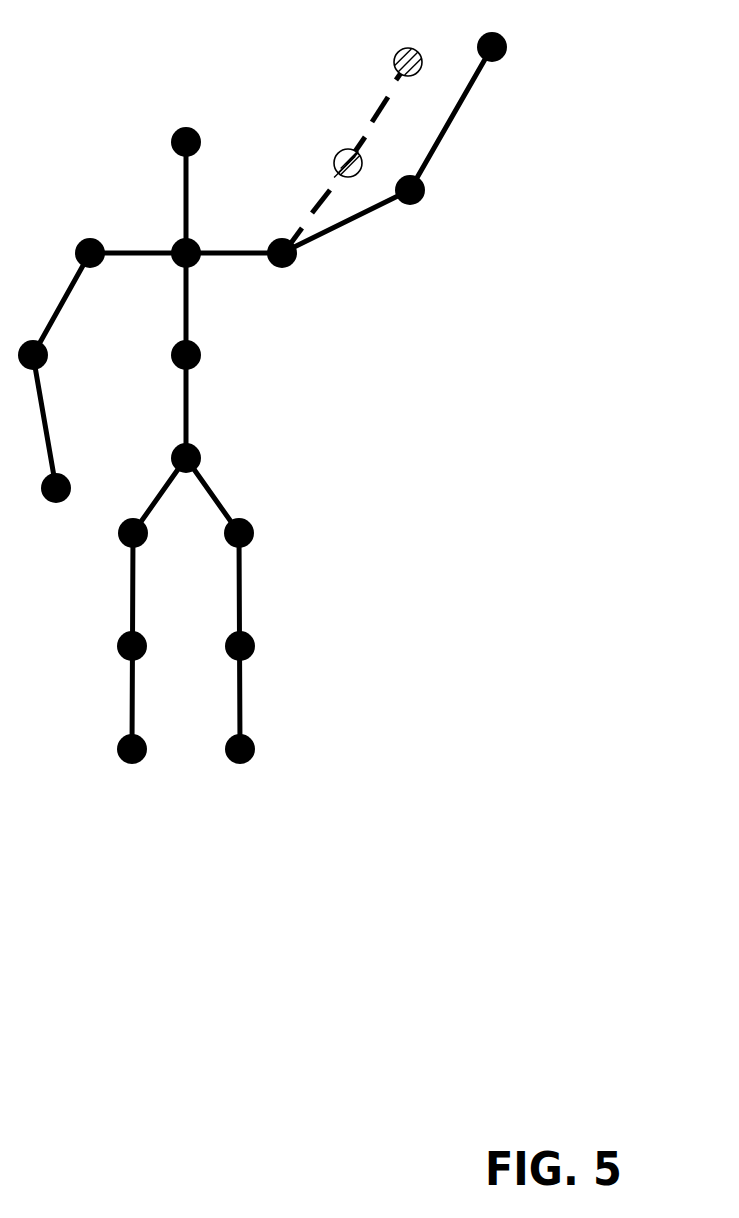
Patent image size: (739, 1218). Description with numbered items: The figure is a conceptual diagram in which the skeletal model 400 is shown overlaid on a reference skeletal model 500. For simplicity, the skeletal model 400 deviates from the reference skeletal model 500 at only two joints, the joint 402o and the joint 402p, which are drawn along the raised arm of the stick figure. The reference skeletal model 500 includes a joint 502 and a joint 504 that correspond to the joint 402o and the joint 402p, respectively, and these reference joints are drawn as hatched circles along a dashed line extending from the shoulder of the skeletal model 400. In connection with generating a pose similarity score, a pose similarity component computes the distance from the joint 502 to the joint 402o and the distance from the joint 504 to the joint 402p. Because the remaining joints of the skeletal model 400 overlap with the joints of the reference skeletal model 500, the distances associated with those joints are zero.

The skeletal model 400 is at (183, 196).
The joint 402o is at (418, 201).
The joint 402p is at (500, 57).
The reference skeletal model 500 is at (373, 110).
The joint 502 is at (337, 154).
The joint 504 is at (398, 49).